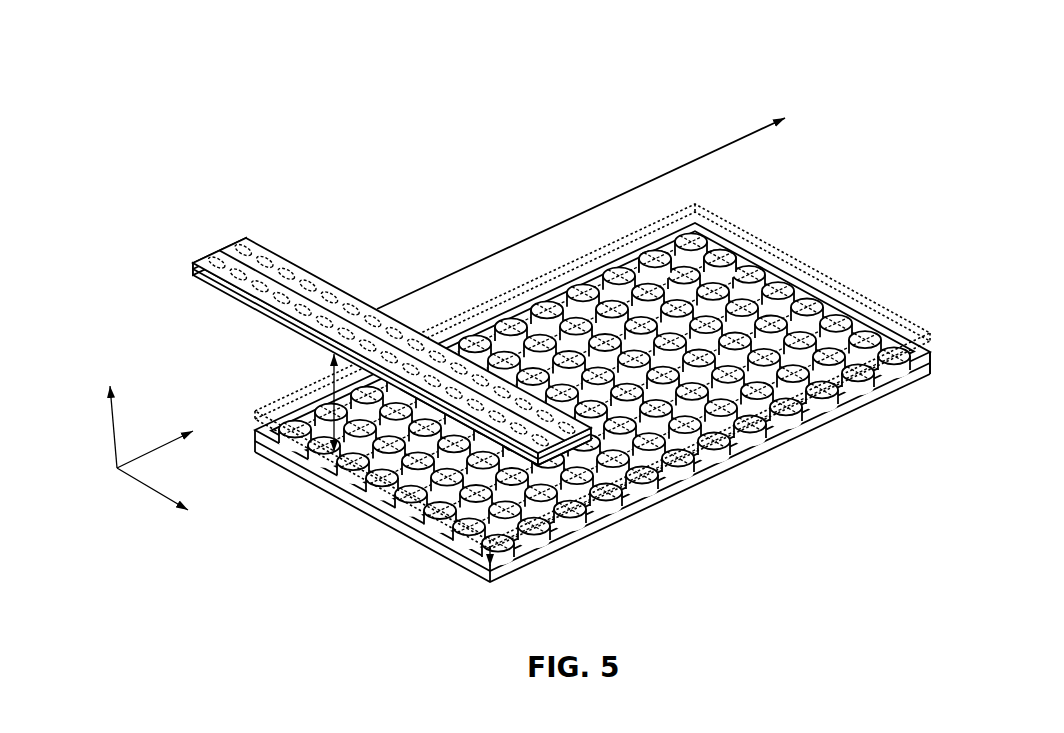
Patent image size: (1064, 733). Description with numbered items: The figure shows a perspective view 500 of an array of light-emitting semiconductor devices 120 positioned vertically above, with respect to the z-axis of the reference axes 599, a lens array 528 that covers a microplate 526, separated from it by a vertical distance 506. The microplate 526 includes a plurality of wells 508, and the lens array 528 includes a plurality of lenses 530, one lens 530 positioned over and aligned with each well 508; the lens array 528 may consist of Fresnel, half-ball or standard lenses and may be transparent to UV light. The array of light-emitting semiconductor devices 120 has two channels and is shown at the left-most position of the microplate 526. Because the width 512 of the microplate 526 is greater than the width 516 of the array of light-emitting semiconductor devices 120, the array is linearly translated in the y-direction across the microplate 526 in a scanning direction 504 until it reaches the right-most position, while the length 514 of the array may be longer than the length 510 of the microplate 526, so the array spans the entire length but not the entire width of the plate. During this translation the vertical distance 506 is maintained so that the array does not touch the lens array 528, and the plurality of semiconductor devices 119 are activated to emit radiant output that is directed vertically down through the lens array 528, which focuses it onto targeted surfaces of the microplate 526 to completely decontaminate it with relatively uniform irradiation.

The perspective view 500 is at (986, 51).
The scanning direction 504 is at (495, 252).
The vertical distance 506 is at (330, 359).
The wells 508 is at (811, 302).
The length of the microplate 510 is at (348, 497).
The width of the microplate 512 is at (688, 486).
The length of the array of light-emitting semiconductor devices 514 is at (231, 298).
The width of the array of light-emitting semiconductor devices 516 is at (557, 458).
The semiconductor devices 119 is at (258, 262).
The array of light-emitting semiconductor devices 120 is at (198, 254).
The microplate 526 is at (935, 373).
The lens array 528 is at (722, 222).
The lens 530 is at (744, 262).
The reference axes 599 is at (94, 376).